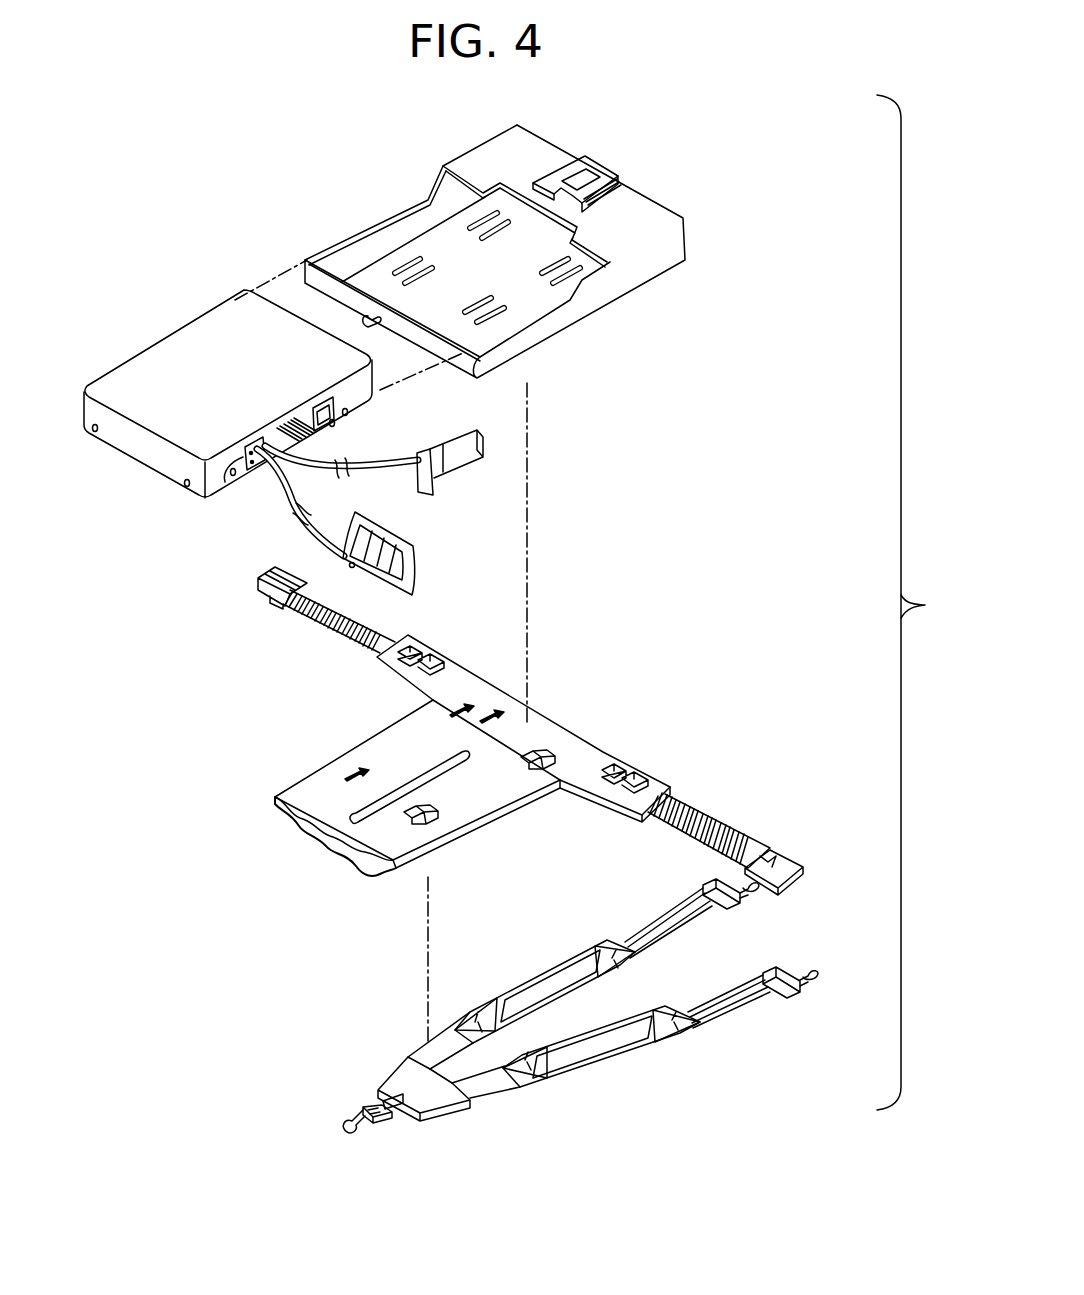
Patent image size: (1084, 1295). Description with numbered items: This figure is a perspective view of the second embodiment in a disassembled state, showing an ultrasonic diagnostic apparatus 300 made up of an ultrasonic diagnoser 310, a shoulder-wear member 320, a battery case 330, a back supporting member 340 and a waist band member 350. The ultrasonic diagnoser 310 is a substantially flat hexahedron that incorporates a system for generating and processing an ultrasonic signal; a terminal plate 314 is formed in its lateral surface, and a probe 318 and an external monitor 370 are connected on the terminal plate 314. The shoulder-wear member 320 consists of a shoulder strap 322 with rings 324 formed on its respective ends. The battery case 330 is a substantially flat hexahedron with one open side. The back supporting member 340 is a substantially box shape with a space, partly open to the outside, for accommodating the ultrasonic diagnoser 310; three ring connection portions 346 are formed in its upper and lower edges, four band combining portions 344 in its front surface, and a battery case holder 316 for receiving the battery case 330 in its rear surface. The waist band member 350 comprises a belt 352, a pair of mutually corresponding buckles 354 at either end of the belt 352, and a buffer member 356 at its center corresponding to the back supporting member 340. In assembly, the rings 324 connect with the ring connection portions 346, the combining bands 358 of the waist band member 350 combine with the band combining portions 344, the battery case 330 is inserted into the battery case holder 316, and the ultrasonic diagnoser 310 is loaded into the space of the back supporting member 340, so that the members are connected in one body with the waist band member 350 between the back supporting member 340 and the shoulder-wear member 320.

The ultrasonic diagnostic apparatus 300 is at (921, 602).
The ultrasonic diagnoser 310 is at (170, 322).
The terminal plate 314 is at (243, 470).
The battery case holder 316 is at (612, 190).
The probe 318 is at (457, 468).
The shoulder-wear member 320 is at (576, 1019).
The shoulder strap 322 is at (484, 1088).
The rings 324 is at (343, 1133).
The battery case 330 is at (598, 162).
The back supporting member 340 is at (537, 248).
The band combining portions 344 is at (492, 308).
The ring connection portions 346 is at (378, 325).
The waist band member 350 is at (650, 750).
The belt 352 is at (740, 830).
The buckles 354 is at (790, 860).
The buffer member 356 is at (305, 782).
The combining bands 358 is at (530, 764).
The external monitor 370 is at (412, 567).